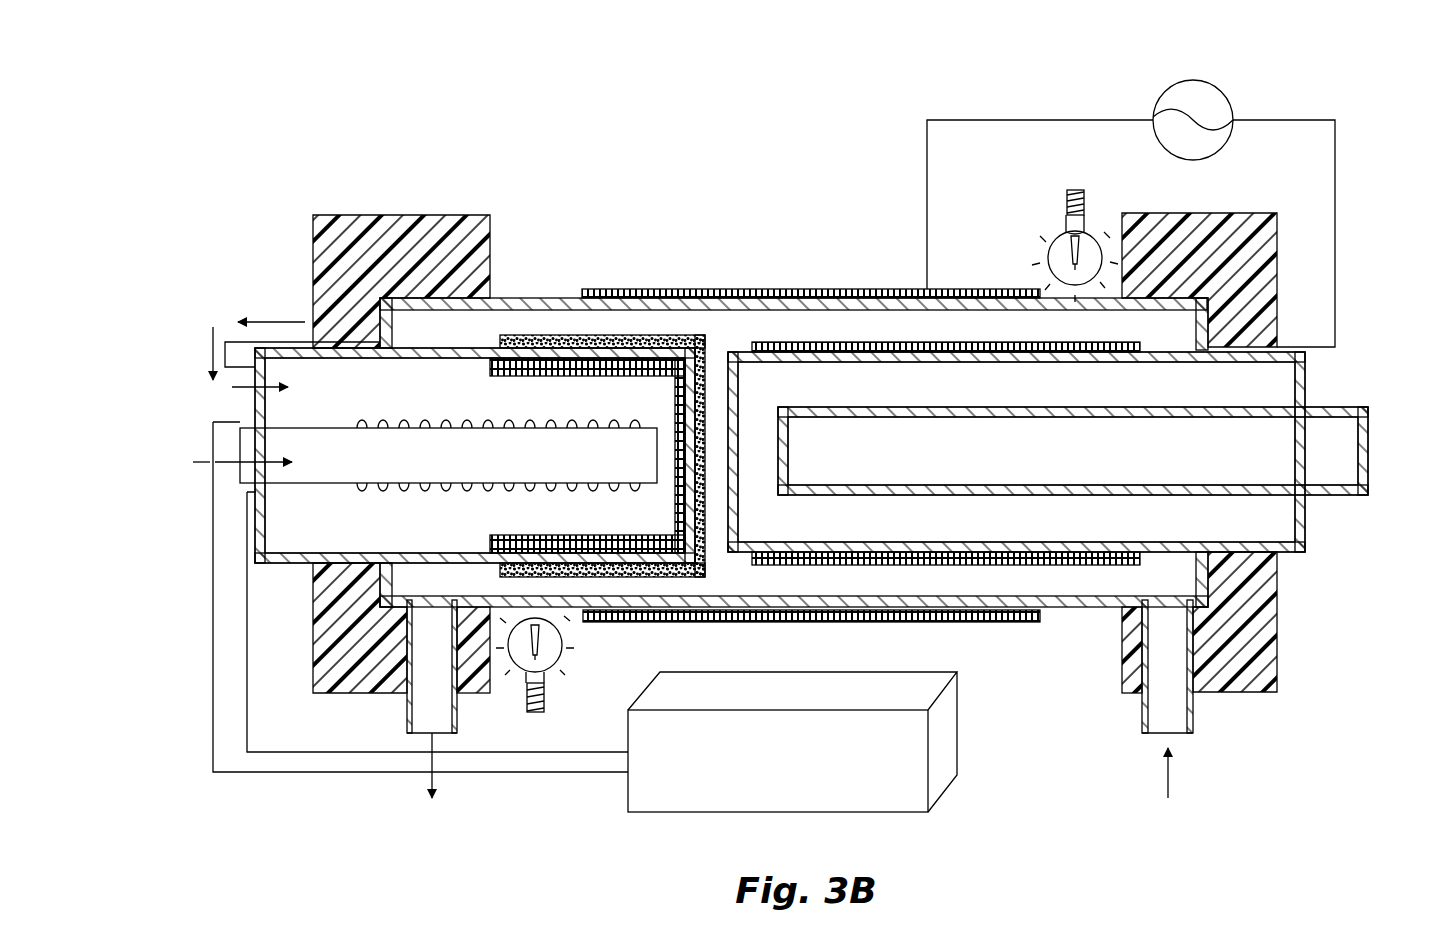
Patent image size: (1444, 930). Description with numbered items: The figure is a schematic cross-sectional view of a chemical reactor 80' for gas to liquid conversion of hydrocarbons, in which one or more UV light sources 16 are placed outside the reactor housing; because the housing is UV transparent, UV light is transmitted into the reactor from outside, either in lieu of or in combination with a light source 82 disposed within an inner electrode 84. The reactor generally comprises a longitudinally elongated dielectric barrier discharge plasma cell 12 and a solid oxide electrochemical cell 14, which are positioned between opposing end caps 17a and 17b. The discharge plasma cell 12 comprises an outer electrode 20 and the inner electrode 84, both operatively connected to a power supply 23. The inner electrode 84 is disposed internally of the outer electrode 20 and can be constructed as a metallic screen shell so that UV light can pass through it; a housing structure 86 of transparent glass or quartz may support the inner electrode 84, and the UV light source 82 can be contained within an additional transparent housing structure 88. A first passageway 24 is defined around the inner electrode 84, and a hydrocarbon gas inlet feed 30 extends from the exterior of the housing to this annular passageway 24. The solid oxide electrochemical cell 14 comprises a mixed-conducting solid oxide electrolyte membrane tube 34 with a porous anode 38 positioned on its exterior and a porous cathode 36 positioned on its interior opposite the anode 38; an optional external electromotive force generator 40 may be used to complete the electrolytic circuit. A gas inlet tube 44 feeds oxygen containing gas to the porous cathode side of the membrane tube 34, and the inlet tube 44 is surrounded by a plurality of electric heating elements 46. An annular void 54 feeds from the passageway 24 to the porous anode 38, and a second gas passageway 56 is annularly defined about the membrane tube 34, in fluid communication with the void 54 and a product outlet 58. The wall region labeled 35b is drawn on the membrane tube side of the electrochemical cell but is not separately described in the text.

The chemical reactor 80' is at (794, 332).
The power supply 23 is at (1222, 92).
The end cap 17b is at (340, 213).
The solid oxide electrochemical cell 14 is at (305, 270).
The porous anode 38 is at (546, 335).
The outer electrode 20 is at (803, 289).
The UV light source 16 is at (1048, 250).
The end cap 17a is at (1228, 213).
The inner electrode 84 is at (1003, 342).
The housing structure 86 is at (808, 362).
The UV light source 82 is at (1250, 445).
The electrolyte membrane tube 34 is at (255, 402).
The electric heating elements 46 is at (420, 414).
The gas inlet tube 44 is at (240, 470).
The porous cathode 36 is at (500, 538).
The housing structure 88 is at (1048, 495).
The dielectric barrier discharge plasma cell 12 is at (1337, 518).
The chamber wall 35b is at (275, 565).
The second gas passageway 56 is at (465, 597).
The annular void 54 is at (718, 537).
The first passageway 24 is at (1083, 580).
The product outlet 58 is at (407, 712).
The hydrocarbon gas inlet feed 30 is at (1195, 713).
The external electromotive force generator 40 is at (893, 790).